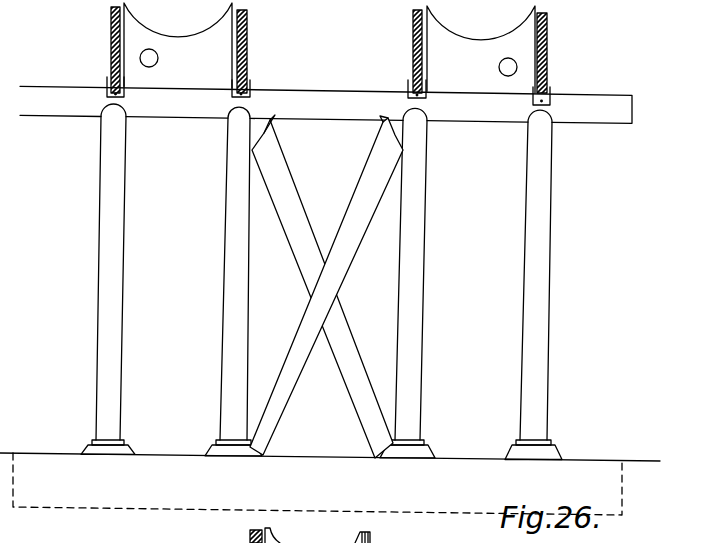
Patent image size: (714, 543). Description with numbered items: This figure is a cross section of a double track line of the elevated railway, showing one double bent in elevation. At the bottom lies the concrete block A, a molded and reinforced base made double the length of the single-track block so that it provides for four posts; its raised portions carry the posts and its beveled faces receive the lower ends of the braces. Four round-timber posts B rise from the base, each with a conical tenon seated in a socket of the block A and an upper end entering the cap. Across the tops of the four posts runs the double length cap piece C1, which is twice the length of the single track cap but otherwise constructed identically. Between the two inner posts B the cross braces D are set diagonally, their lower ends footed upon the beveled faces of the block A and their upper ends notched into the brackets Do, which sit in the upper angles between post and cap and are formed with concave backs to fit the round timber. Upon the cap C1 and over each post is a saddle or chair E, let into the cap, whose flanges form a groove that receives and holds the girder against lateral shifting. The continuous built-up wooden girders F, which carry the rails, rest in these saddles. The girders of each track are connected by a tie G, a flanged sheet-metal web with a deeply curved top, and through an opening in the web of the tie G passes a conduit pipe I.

The concrete block A is at (208, 450).
The post B is at (232, 280).
The double length cap piece C1 is at (592, 117).
The cross brace D is at (363, 397).
The bracket Do is at (275, 117).
The saddle or chair E is at (550, 100).
The girder F is at (111, 45).
The tie G is at (329, 48).
The conduit pipe I is at (157, 63).